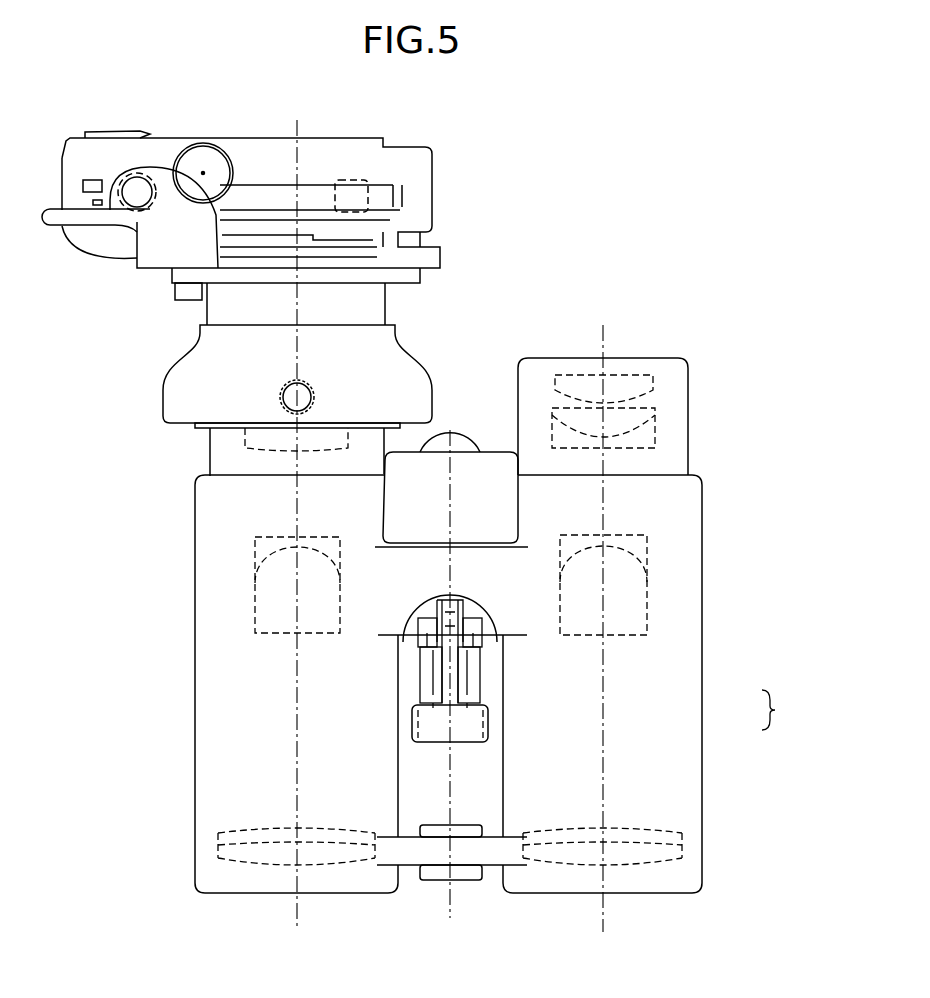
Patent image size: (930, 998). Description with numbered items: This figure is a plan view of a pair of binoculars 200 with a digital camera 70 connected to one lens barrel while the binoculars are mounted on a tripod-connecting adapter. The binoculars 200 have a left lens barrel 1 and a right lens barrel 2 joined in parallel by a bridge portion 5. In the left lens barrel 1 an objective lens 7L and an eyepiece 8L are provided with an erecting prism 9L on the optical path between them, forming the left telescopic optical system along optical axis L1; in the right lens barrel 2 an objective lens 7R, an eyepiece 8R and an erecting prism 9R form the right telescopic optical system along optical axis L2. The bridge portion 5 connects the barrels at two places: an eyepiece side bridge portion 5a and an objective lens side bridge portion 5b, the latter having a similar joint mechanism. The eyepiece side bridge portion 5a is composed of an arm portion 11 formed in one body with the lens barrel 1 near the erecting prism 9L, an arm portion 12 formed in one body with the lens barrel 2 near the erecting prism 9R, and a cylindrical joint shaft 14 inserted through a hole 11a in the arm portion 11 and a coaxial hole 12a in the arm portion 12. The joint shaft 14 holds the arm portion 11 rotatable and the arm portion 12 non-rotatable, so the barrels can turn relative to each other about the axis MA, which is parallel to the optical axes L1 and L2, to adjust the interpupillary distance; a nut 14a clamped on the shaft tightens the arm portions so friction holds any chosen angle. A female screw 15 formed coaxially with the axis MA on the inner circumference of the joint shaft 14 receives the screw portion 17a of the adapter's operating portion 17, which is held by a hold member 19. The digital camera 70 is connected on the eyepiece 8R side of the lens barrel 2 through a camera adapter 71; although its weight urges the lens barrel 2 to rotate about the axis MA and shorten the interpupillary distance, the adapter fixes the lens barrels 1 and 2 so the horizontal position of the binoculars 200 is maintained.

The pair of binoculars 200 is at (651, 249).
The digital camera 70 is at (395, 172).
The camera adapter 71 is at (190, 367).
The eyepiece 8R is at (257, 436).
The eyepiece 8L is at (632, 415).
The erecting prism 9R is at (280, 585).
The erecting prism 9L is at (627, 625).
The objective lens 7R is at (230, 850).
The objective lens 7L is at (673, 848).
The left lens barrel 1 is at (685, 797).
The right lens barrel 2 is at (217, 797).
The arm portion 11 is at (436, 606).
The hole 11a is at (458, 597).
The arm portion 12 is at (432, 613).
The hole 12a is at (478, 632).
The joint shaft 14 is at (432, 600).
The nut 14a is at (425, 648).
The female screw 15 is at (482, 615).
The operating portion 17 is at (427, 727).
The screw portion 17a is at (425, 638).
The hold member 19 is at (427, 687).
The bridge portion 5 is at (777, 710).
The eyepiece side bridge portion 5a is at (525, 636).
The objective lens side bridge portion 5b is at (483, 823).
The optical axis L1 is at (605, 887).
The optical axis L2 is at (297, 885).
The axis MA is at (453, 895).